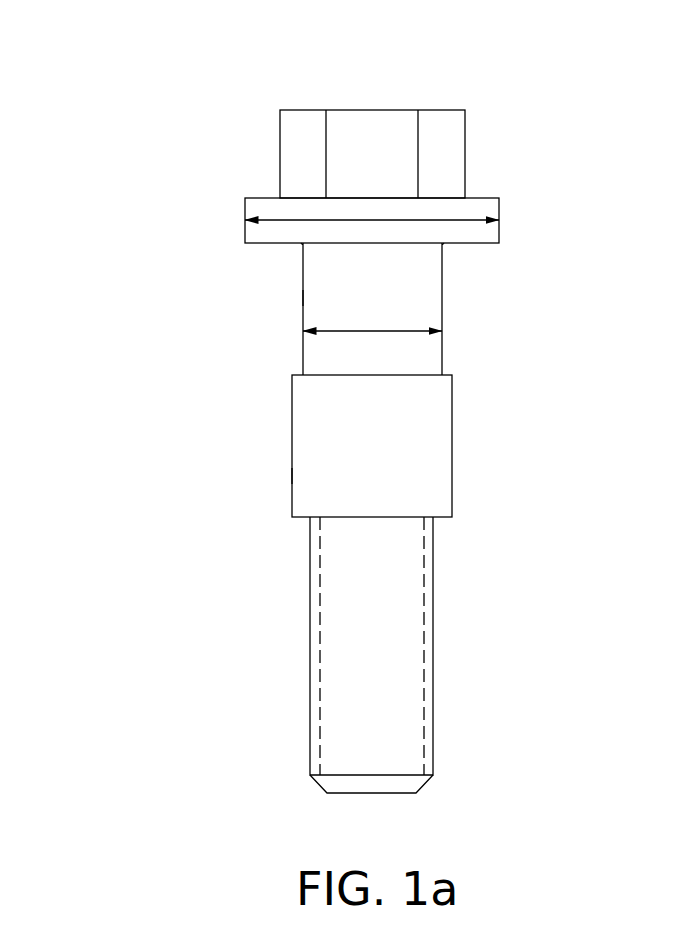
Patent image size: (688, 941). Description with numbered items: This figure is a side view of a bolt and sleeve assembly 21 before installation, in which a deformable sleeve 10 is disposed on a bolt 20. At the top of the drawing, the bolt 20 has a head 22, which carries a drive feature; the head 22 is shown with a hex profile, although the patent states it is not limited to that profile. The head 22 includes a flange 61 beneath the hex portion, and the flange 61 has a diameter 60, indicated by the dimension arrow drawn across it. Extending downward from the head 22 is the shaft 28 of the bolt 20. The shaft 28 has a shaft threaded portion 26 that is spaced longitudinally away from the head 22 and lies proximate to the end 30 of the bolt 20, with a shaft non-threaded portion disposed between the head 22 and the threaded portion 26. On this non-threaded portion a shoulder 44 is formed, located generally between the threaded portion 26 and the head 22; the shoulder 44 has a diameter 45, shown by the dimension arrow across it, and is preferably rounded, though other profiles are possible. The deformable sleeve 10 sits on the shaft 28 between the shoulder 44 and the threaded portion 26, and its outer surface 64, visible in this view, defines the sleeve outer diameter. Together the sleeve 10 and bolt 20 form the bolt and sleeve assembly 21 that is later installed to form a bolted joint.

The bolt and sleeve assembly 21 is at (260, 99).
The bolt 20 is at (467, 136).
The head 22 is at (354, 128).
The flange 61 is at (500, 205).
The diameter 60 is at (245, 220).
The shaft 28 is at (443, 293).
The shoulder 44 is at (303, 298).
The diameter 45 is at (303, 331).
The deformable sleeve 10 is at (387, 452).
The outer surface 64 is at (292, 476).
The shaft threaded portion 26 is at (435, 620).
The end 30 is at (392, 793).